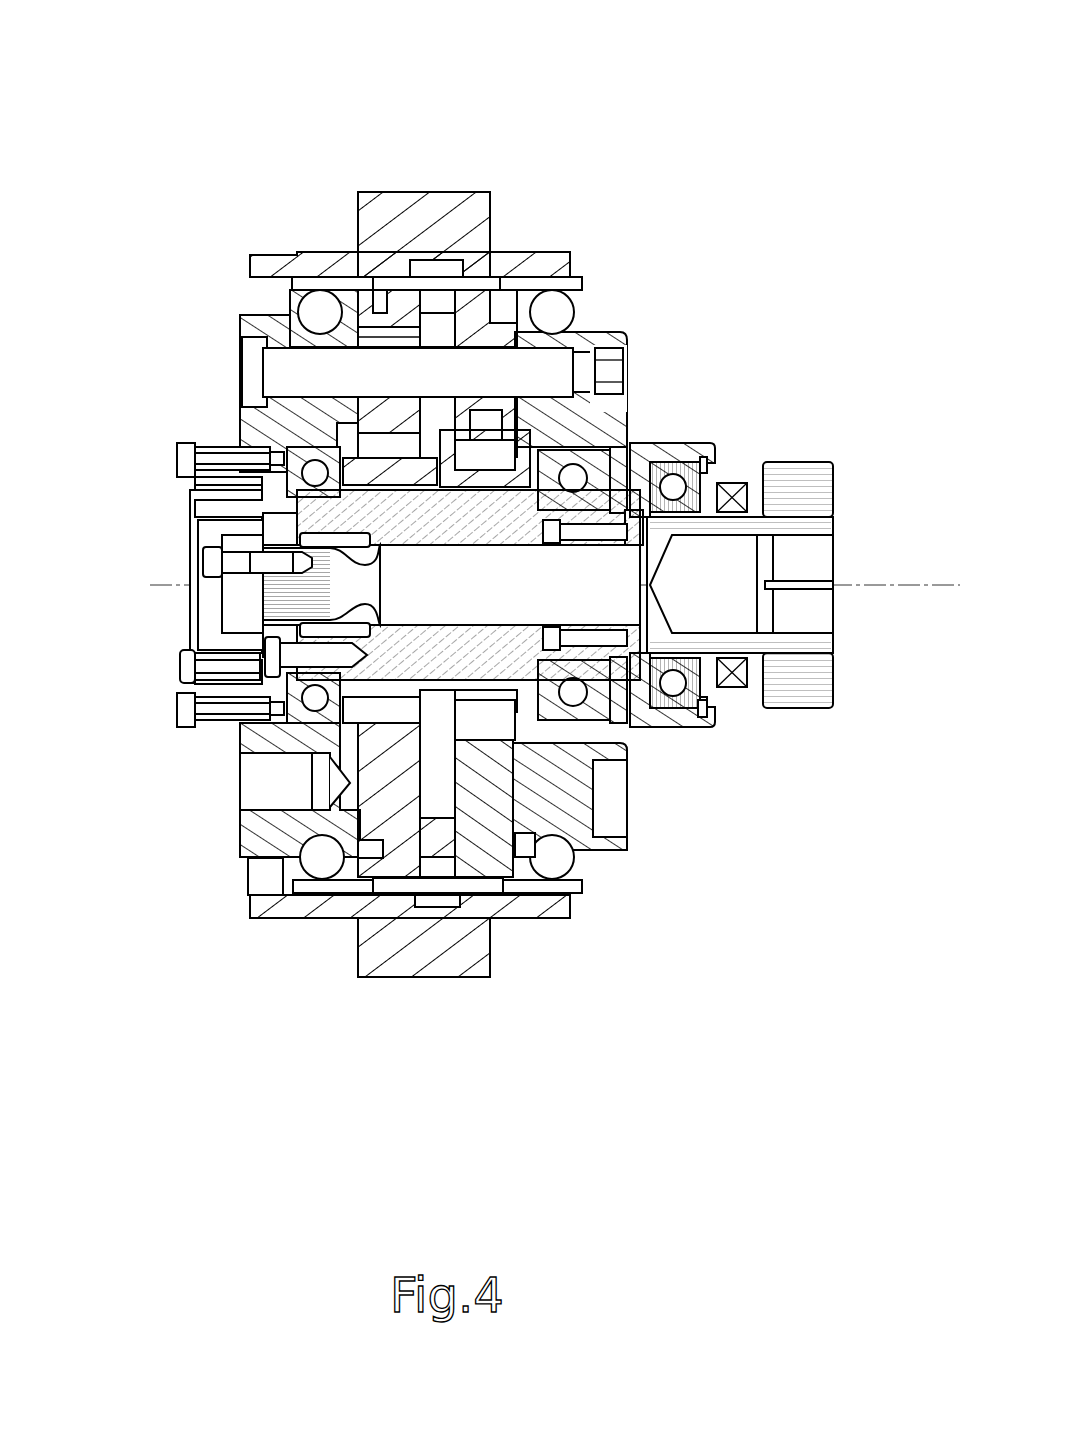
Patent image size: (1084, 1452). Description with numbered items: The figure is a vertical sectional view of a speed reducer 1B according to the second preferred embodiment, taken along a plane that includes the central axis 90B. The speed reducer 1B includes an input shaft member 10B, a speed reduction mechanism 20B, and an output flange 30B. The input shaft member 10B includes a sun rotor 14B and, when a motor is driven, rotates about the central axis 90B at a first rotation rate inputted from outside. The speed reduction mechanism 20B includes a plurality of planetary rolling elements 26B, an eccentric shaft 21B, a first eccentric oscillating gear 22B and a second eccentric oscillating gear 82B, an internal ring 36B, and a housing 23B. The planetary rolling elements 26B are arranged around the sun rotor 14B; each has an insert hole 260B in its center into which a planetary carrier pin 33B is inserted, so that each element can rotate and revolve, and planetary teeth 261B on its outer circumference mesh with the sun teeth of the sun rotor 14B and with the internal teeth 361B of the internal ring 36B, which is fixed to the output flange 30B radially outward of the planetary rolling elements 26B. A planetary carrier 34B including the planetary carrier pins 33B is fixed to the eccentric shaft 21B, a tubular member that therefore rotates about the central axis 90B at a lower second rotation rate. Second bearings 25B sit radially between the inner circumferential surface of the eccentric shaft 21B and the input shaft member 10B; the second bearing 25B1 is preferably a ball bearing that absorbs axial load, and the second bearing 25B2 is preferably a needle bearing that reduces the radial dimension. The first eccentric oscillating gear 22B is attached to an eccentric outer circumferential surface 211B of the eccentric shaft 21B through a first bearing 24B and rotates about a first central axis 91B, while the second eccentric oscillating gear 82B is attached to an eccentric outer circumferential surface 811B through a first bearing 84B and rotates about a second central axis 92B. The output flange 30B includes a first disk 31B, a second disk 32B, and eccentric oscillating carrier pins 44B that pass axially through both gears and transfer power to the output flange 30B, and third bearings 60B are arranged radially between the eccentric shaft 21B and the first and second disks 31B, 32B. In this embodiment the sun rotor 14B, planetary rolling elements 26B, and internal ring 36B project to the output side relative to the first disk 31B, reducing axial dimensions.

The speed reducer 1B is at (587, 115).
The input shaft member 10B is at (922, 673).
The sun rotor 14B is at (233, 610).
The speed reduction mechanism 20B is at (227, 747).
The eccentric shaft 21B is at (678, 453).
The eccentric outer circumferential surface 211B is at (390, 713).
The first eccentric oscillating gear 22B is at (390, 822).
The housing 23B is at (393, 237).
The first bearing 24B is at (388, 780).
The second bearings 25B is at (483, 781).
The second bearing 25B1 is at (717, 715).
The second bearing 25B2 is at (318, 768).
The planetary rolling elements 26B is at (217, 512).
The insert hole 260B is at (217, 490).
The planetary teeth 261B is at (200, 478).
The output flange 30B is at (235, 327).
The first disk 31B is at (263, 425).
The second disk 32B is at (600, 742).
The planetary carrier pin 33B is at (210, 583).
The planetary carrier 34B is at (228, 733).
The internal ring 36B is at (208, 445).
The internal teeth 361B is at (222, 697).
The eccentric oscillating carrier pins 44B is at (515, 365).
The third bearings 60B is at (323, 457).
The second eccentric oscillating gear 82B is at (470, 723).
The first bearing 84B is at (537, 810).
The eccentric outer circumferential surface 811B is at (625, 838).
The central axis 90B is at (735, 587).
The first central axis 91B is at (493, 577).
The second central axis 92B is at (813, 638).